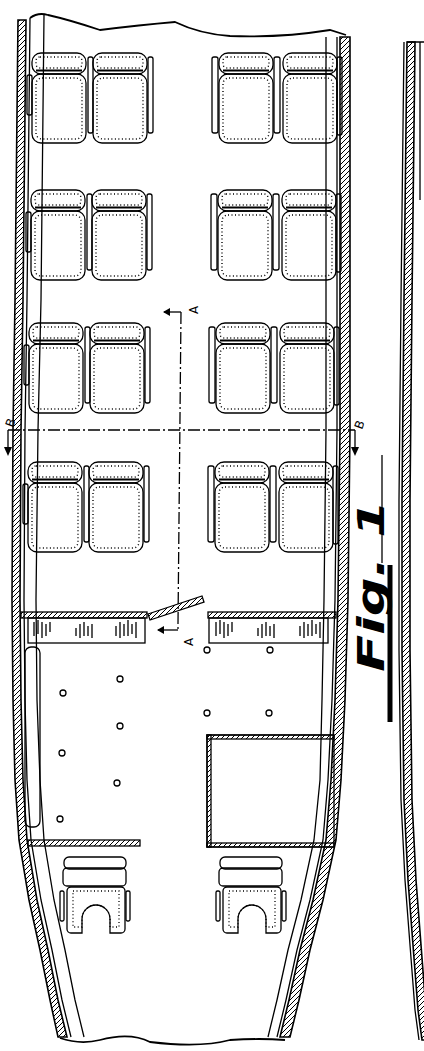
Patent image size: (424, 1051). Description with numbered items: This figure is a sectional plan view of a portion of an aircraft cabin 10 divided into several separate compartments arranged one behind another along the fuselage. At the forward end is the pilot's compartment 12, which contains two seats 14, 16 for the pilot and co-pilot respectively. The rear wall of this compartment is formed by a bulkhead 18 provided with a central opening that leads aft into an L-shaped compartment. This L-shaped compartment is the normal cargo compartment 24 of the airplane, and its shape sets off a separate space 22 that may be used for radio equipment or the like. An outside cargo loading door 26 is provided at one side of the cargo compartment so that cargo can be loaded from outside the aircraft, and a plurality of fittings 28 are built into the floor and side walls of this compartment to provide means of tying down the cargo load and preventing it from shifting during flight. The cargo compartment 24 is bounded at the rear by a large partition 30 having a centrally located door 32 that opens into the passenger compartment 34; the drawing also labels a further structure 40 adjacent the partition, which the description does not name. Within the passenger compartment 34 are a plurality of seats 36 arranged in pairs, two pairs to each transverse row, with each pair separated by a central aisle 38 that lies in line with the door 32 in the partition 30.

The aircraft cabin 10 is at (394, 817).
The pilot's compartment 12 is at (173, 916).
The seat 14 is at (218, 921).
The seat 16 is at (129, 923).
The bulkhead 18 is at (107, 839).
The separate space 22 is at (270, 791).
The normal cargo compartment 24 is at (91, 713).
The outside cargo loading door 26 is at (29, 799).
The fittings 28 is at (122, 723).
The partition 30 is at (258, 611).
The door 32 is at (163, 607).
The passenger compartment 34 is at (199, 447).
The seats 36 is at (106, 461).
The central aisle 38 is at (183, 233).
The galley cabinet 40 is at (86, 645).